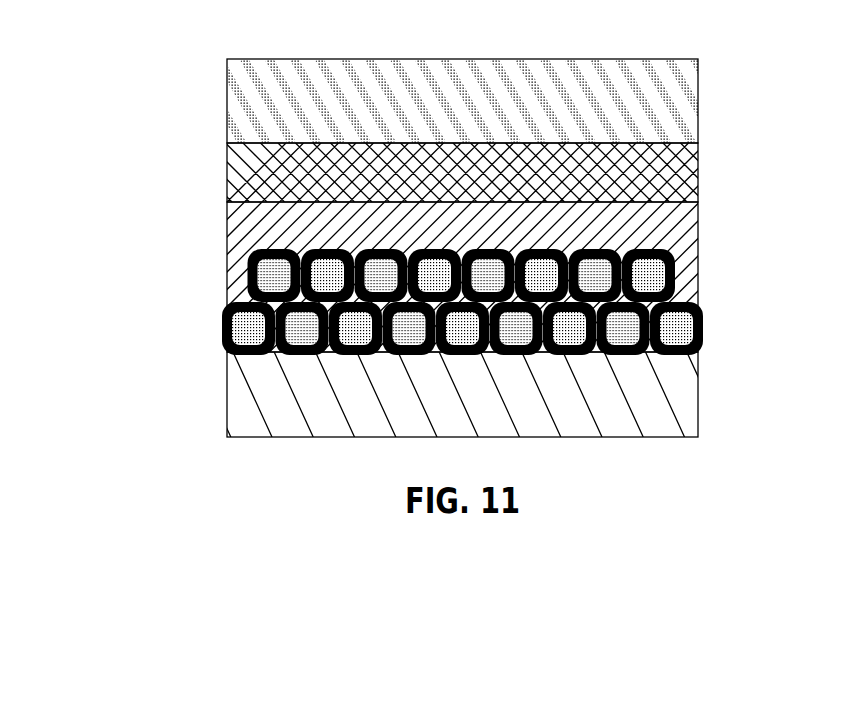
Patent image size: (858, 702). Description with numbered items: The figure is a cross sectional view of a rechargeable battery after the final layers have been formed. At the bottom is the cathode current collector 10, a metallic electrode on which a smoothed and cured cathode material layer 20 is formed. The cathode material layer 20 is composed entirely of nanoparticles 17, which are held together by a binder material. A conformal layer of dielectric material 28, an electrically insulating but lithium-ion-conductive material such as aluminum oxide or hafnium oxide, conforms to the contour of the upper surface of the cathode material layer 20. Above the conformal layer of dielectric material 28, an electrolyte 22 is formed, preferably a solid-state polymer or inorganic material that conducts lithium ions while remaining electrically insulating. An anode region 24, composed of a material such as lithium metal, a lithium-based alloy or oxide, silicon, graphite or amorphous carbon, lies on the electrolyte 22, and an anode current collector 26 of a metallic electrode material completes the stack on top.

The cathode current collector 10 is at (476, 410).
The nanoparticles 17 is at (338, 272).
The cathode material layer 20 is at (473, 251).
The electrolyte 22 is at (476, 238).
The anode region 24 is at (476, 188).
The anode current collector 26 is at (476, 116).
The conformal layer of dielectric material 28 is at (647, 248).